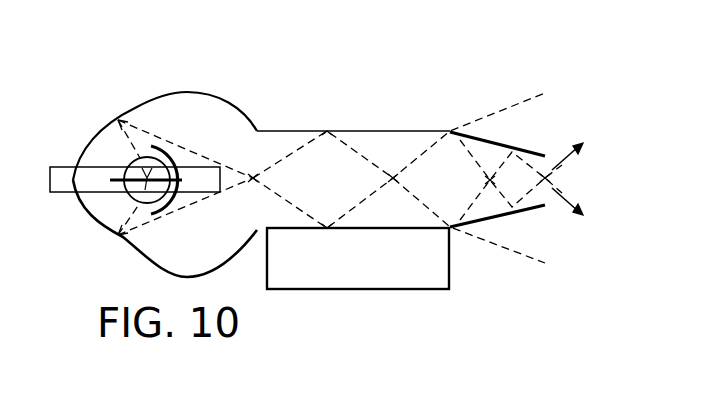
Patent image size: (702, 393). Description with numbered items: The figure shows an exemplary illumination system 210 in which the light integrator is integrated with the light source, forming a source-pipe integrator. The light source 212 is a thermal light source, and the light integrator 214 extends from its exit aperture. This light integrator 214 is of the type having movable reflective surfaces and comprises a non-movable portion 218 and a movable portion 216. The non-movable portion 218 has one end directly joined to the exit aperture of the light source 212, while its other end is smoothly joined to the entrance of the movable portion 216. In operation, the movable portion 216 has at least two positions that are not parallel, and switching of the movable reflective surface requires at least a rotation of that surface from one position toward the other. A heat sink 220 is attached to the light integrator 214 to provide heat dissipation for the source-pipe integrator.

The illumination system 210 is at (377, 88).
The light source 212 is at (188, 91).
The light integrator 214 is at (432, 130).
The movable portion 216 is at (505, 248).
The non-movable portion 218 is at (303, 130).
The heat sink 220 is at (357, 291).